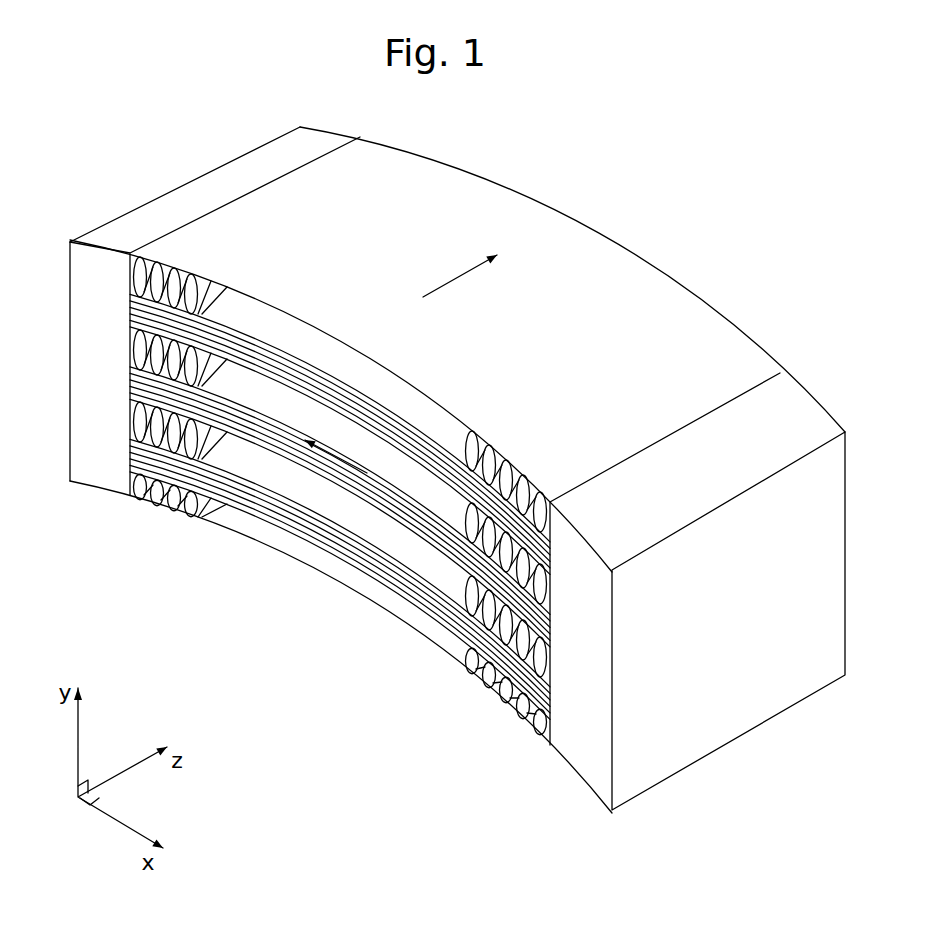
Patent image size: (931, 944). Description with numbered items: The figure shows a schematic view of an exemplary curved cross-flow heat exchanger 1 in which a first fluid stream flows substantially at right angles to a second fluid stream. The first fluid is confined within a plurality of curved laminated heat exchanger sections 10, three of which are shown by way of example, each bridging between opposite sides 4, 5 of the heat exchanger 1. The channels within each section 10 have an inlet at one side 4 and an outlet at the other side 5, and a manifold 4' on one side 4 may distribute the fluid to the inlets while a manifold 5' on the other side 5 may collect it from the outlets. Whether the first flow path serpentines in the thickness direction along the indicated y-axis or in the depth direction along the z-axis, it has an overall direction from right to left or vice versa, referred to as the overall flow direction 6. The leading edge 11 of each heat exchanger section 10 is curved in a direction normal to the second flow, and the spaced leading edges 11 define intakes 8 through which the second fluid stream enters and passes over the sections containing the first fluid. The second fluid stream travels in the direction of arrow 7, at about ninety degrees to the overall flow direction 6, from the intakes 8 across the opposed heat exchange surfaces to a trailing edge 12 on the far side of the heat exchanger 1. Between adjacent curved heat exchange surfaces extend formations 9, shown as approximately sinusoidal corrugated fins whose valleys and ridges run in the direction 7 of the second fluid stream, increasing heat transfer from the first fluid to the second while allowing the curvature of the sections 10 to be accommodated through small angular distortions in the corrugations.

The curved cross-flow heat exchanger 1 is at (700, 230).
The side 4 is at (425, 526).
The manifold 4' is at (734, 621).
The side 5 is at (213, 220).
The manifold 5' is at (93, 401).
The overall flow direction 6 is at (347, 467).
The direction of the second fluid stream 7 is at (463, 273).
The intake 8 is at (417, 548).
The formations 9 is at (153, 500).
The curved laminated heat exchanger section 10 is at (290, 502).
The leading edge 11 is at (247, 492).
The trailing edge 12 is at (588, 224).